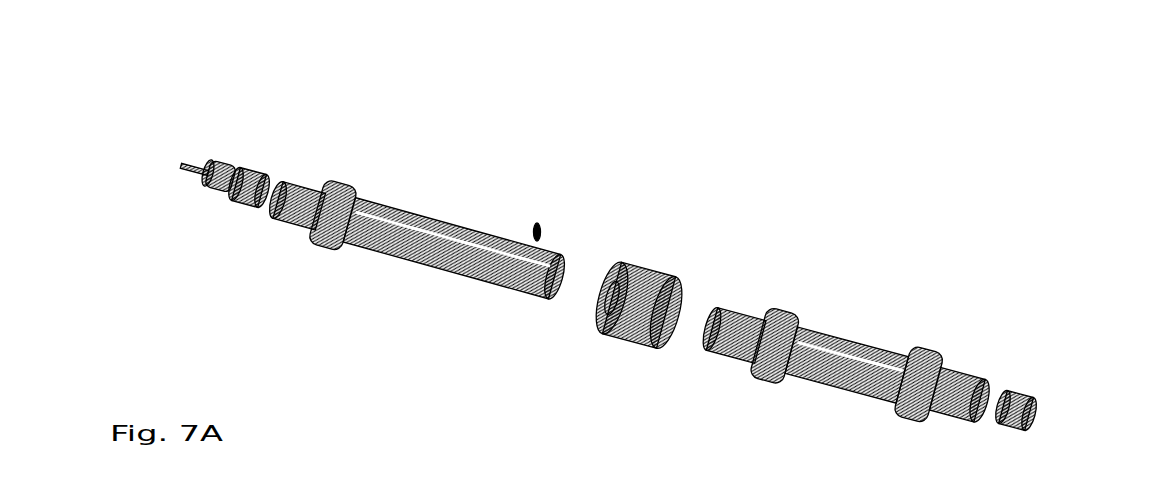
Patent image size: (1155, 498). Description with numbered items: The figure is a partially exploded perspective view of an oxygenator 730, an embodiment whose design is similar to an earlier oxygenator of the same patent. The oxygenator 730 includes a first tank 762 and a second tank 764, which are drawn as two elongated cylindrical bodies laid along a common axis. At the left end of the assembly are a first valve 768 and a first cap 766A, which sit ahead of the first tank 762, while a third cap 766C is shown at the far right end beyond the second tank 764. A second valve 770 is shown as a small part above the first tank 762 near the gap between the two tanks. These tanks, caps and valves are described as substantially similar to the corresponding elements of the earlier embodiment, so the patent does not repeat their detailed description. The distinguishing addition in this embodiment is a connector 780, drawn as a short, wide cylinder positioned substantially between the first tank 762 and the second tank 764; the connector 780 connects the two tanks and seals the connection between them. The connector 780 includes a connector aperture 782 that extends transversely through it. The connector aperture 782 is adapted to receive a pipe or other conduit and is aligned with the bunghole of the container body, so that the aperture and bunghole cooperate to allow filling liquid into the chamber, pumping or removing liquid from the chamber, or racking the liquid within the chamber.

The oxygenator 730 is at (895, 112).
The first tank 762 is at (420, 212).
The second tank 764 is at (817, 330).
The first cap 766A is at (231, 170).
The third cap 766C is at (1024, 392).
The first valve 768 is at (186, 167).
The second valve 770 is at (538, 222).
The connector 780 is at (625, 268).
The connector aperture 782 is at (613, 316).